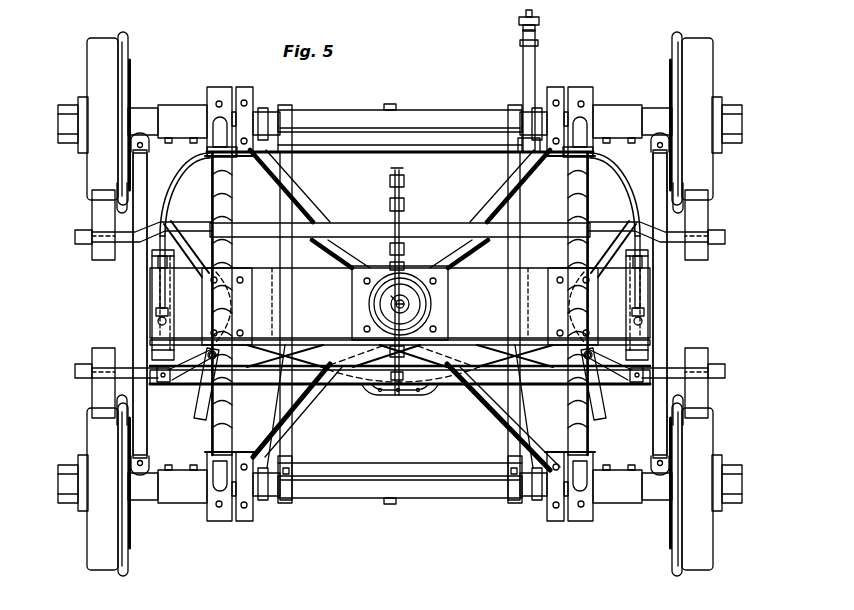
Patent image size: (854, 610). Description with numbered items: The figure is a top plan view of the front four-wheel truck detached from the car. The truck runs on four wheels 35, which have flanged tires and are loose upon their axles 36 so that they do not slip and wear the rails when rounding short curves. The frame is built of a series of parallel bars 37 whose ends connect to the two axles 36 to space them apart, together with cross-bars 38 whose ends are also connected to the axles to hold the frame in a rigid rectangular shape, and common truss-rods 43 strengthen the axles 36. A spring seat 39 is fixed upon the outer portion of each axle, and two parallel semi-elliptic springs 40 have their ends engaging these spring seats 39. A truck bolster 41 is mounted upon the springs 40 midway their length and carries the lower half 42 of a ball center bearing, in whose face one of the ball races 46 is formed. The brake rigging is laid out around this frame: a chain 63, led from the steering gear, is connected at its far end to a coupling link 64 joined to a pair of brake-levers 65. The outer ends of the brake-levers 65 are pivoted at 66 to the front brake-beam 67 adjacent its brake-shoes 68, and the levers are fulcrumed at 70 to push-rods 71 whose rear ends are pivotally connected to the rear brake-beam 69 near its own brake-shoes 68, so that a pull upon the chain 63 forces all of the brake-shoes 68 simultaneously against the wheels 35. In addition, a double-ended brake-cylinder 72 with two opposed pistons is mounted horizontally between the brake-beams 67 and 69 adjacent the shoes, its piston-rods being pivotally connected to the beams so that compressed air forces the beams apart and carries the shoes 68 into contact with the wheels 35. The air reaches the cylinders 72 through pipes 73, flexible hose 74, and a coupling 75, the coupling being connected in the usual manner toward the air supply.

The wheels 35 is at (92, 59).
The axles 36 is at (358, 114).
The parallel bars 37 is at (146, 171).
The cross-bars 38 is at (303, 205).
The spring seat 39 is at (256, 72).
The semi-elliptic springs 40 is at (230, 215).
The truck bolster 41 is at (400, 303).
The lower half of ball center bearing 42 is at (385, 311).
The truss-rods 43 is at (392, 106).
The ball races 46 is at (418, 305).
The chain 63 is at (405, 183).
The coupling link 64 is at (380, 397).
The brake-levers 65 is at (326, 400).
The pivot 66 is at (152, 383).
The front brake-beam 67 is at (534, 397).
The brake-shoes 68 is at (100, 213).
The rear brake-beam 69 is at (450, 206).
The fulcrum 70 is at (210, 352).
The push-rods 71 is at (168, 263).
The brake-cylinders 72 is at (160, 315).
The pipes 73 is at (170, 195).
The flexible hose 74 is at (536, 73).
The coupling 75 is at (540, 29).